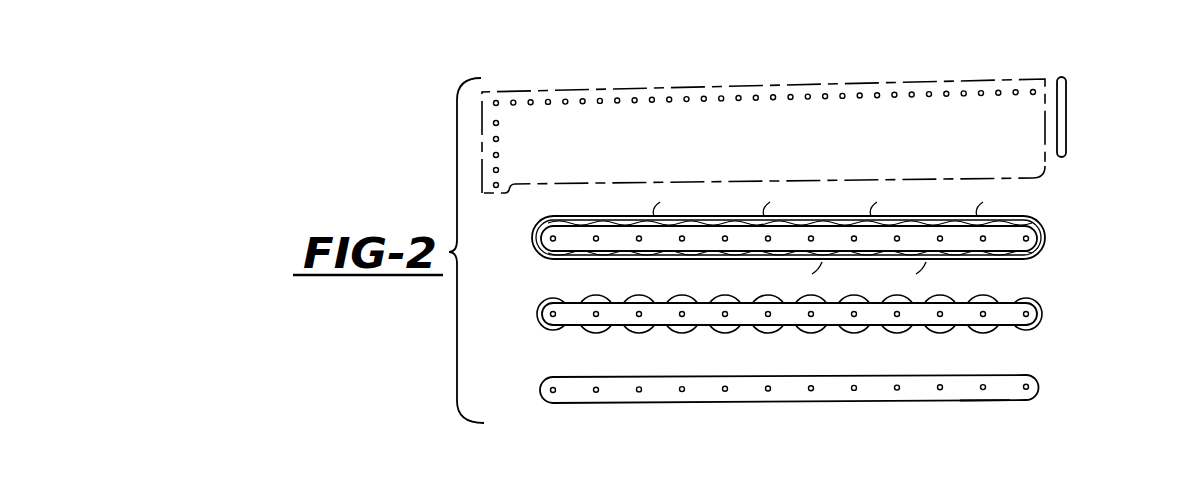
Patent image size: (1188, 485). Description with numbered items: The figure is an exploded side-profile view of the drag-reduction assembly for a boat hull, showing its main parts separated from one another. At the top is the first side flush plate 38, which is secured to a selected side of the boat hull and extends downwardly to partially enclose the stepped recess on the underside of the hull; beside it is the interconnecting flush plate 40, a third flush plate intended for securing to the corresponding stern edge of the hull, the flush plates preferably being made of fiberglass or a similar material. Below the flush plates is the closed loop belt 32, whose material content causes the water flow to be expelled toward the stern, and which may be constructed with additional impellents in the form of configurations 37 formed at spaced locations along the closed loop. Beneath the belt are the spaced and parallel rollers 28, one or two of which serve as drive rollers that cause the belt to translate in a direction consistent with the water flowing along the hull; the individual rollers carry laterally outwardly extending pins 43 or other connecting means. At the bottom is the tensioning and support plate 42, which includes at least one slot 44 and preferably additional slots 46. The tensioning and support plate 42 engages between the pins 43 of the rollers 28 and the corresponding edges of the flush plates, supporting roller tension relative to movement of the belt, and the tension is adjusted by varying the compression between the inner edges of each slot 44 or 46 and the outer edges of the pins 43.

The rollers 28 is at (997, 294).
The closed loop belt 32 is at (1048, 226).
The configurations 37 is at (688, 272).
The first side flush plate 38 is at (771, 138).
The interconnecting flush plate 40 is at (1066, 127).
The tensioning and support plate 42 is at (982, 401).
The pins 43 is at (596, 317).
The slot 44 is at (1029, 385).
The additional slots 46 is at (942, 390).